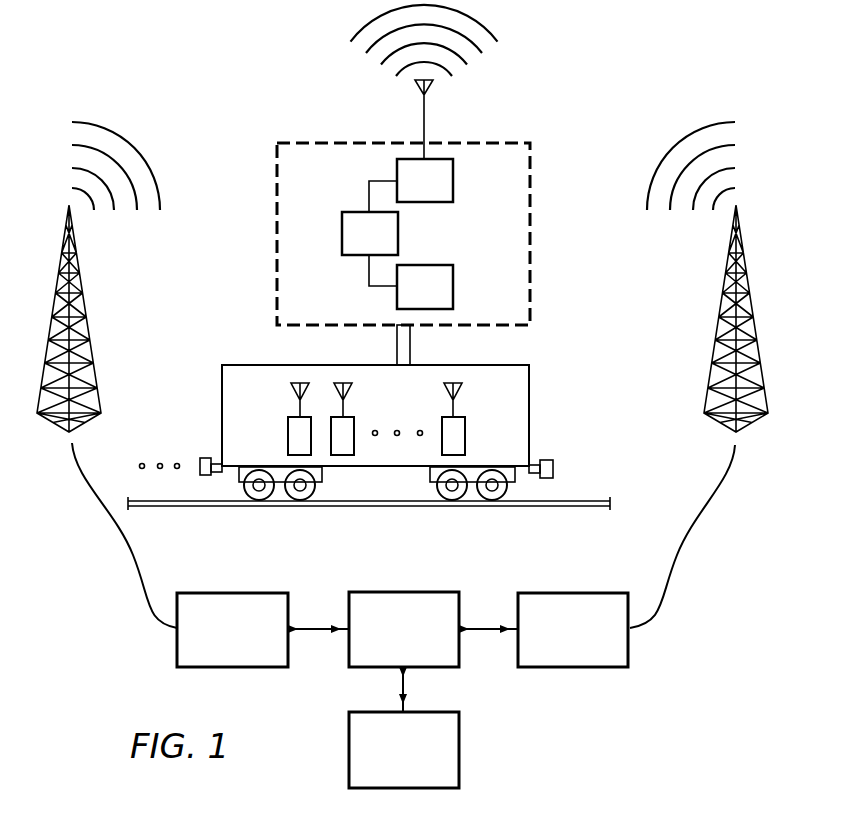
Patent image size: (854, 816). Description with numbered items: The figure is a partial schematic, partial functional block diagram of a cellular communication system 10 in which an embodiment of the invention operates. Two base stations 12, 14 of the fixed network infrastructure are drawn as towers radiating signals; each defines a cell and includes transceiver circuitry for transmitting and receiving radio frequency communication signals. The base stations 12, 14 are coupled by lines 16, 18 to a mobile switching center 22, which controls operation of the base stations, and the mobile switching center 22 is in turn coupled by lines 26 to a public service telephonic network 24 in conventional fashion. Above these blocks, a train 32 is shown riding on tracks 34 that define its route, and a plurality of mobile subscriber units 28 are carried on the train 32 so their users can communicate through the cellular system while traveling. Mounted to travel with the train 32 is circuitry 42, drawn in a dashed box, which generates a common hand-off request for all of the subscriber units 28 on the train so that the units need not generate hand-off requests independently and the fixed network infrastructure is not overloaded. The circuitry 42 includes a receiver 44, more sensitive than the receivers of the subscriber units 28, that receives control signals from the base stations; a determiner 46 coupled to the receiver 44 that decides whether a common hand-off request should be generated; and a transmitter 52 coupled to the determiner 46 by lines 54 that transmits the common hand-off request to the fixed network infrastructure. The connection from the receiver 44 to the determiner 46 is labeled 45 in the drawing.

The communication system 10 is at (606, 89).
The base station 12 is at (228, 593).
The base station 14 is at (578, 592).
The line 16 is at (327, 625).
The line 18 is at (483, 625).
The mobile switching center 22 is at (400, 592).
The public service telephonic network 24 is at (459, 750).
The lines 26 is at (400, 690).
The mobile subscriber units 28 is at (288, 435).
The train 32 is at (240, 365).
The tracks 34 is at (568, 502).
The circuitry 42 is at (496, 245).
The receiver 44 is at (453, 181).
The connection 45 is at (368, 197).
The determiner 46 is at (342, 230).
The transmitter 52 is at (453, 290).
The lines 54 is at (368, 275).